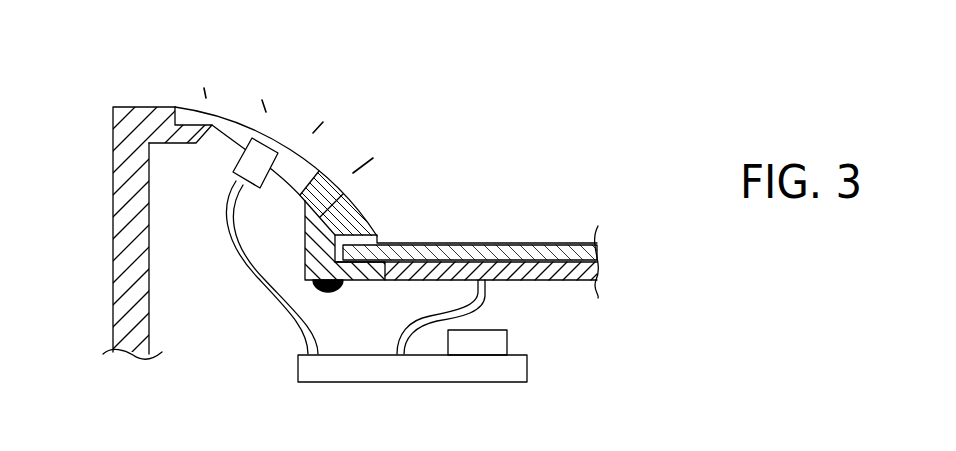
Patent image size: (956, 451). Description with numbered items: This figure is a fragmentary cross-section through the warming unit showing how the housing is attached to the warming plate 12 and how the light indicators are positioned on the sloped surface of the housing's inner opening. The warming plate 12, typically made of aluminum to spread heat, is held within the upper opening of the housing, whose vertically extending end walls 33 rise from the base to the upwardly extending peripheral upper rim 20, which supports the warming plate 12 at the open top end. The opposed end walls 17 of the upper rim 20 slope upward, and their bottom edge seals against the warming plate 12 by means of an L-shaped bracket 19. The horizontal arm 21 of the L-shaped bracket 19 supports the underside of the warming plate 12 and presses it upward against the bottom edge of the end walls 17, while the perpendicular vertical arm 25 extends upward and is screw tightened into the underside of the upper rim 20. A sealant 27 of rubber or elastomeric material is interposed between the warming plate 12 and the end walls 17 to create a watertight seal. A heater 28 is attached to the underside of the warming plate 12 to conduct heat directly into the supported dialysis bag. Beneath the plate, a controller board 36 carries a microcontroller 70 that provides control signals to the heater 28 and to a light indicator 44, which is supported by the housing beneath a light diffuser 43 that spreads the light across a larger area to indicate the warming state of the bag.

The warming plate 12 is at (557, 242).
The opposed end walls 17 is at (357, 232).
The L-shaped bracket 19 is at (290, 280).
The upper rim 20 is at (152, 115).
The horizontal arm 21 is at (340, 278).
The vertical arm 25 is at (320, 228).
The sealant 27 is at (370, 240).
The heater 28 is at (572, 277).
The end walls 33 is at (122, 231).
The controller board 36 is at (442, 375).
The light diffuser 43 is at (213, 118).
The light indicator 44 is at (262, 152).
The microcontroller 70 is at (497, 338).